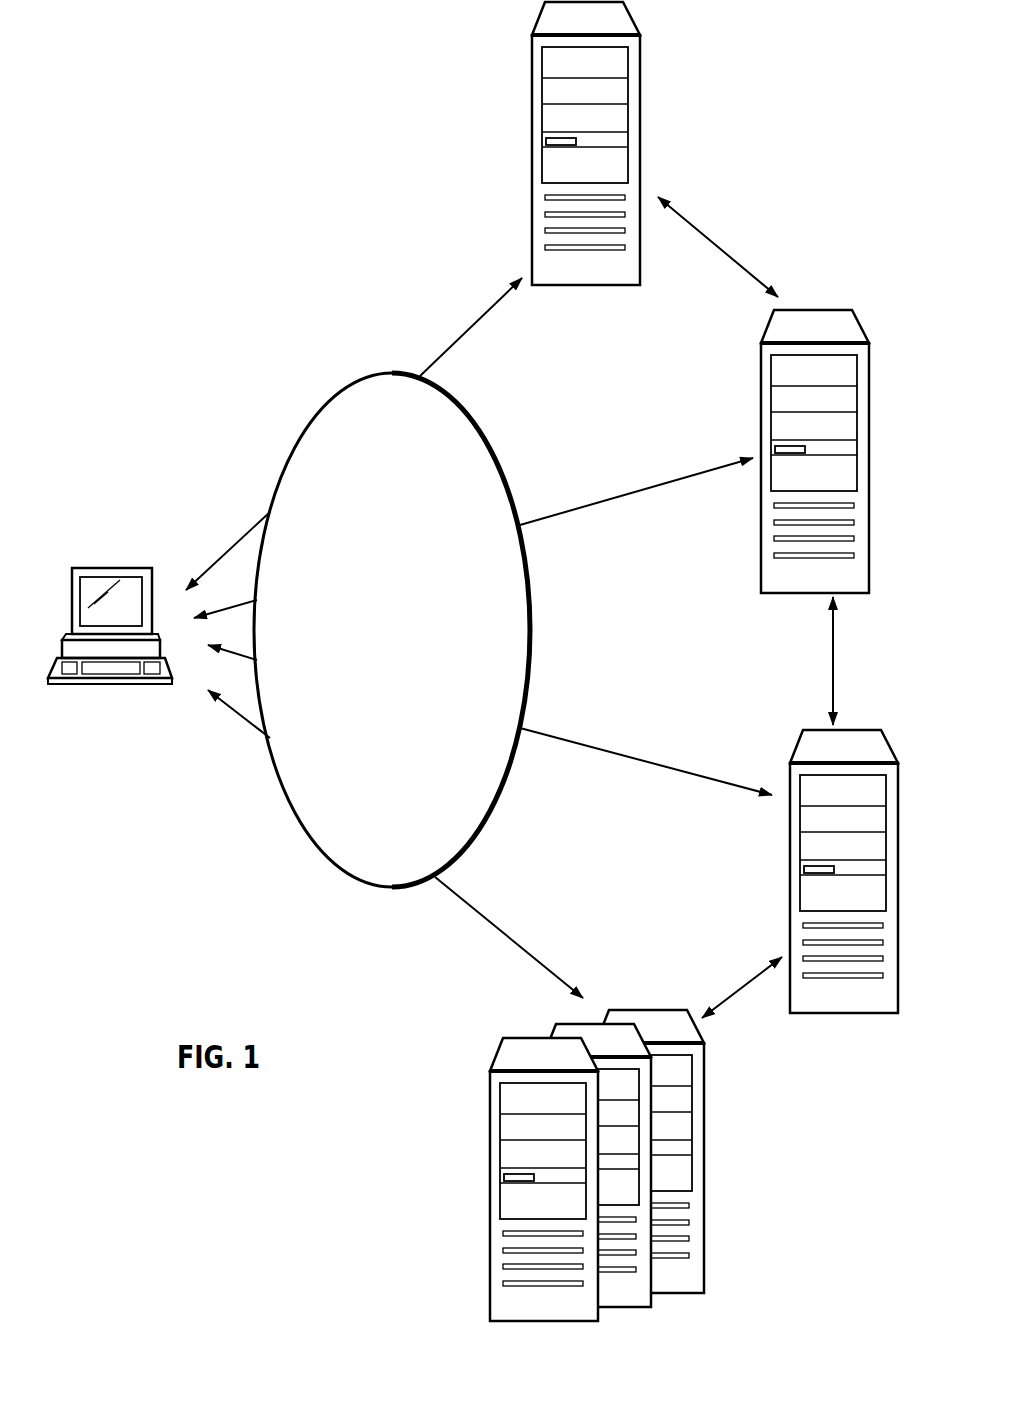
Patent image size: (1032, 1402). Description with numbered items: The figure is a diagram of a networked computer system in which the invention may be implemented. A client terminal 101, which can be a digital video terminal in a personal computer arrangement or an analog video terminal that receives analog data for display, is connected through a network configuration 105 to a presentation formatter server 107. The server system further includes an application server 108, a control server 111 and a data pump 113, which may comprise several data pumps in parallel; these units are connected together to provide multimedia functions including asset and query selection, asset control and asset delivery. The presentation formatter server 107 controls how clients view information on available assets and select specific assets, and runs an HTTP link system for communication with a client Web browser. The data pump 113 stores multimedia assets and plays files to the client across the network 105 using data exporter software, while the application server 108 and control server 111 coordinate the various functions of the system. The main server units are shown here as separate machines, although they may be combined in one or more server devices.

The client terminal 101 is at (124, 567).
The network configuration 105 is at (529, 608).
The presentation formatter server 107 is at (640, 62).
The application server 108 is at (759, 558).
The control server 111 is at (788, 893).
The data pump 113 is at (703, 1192).